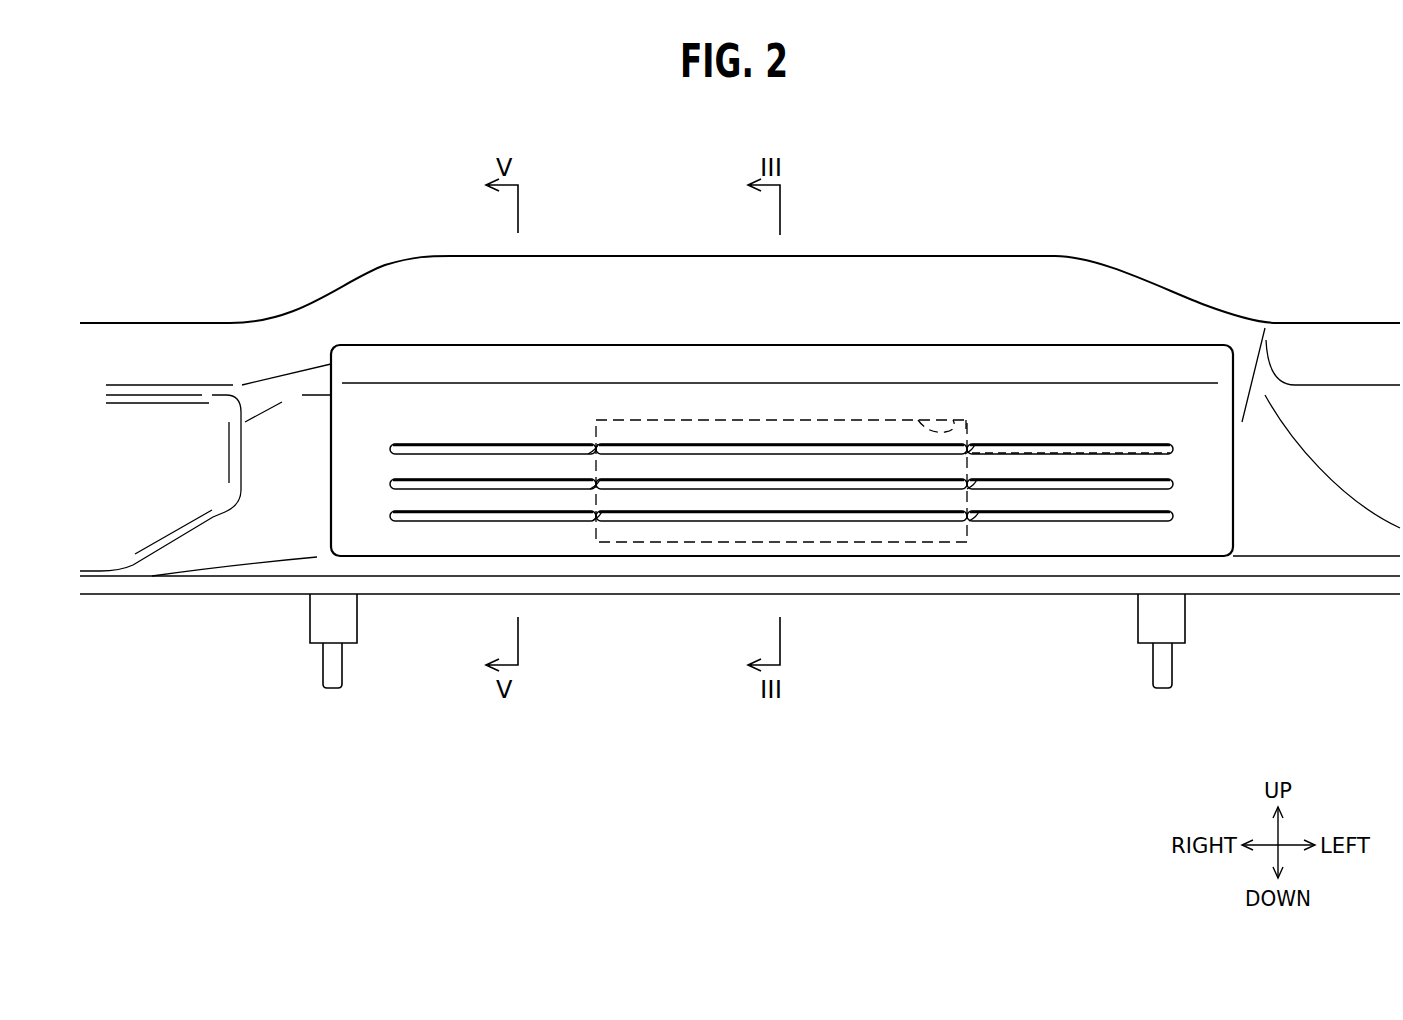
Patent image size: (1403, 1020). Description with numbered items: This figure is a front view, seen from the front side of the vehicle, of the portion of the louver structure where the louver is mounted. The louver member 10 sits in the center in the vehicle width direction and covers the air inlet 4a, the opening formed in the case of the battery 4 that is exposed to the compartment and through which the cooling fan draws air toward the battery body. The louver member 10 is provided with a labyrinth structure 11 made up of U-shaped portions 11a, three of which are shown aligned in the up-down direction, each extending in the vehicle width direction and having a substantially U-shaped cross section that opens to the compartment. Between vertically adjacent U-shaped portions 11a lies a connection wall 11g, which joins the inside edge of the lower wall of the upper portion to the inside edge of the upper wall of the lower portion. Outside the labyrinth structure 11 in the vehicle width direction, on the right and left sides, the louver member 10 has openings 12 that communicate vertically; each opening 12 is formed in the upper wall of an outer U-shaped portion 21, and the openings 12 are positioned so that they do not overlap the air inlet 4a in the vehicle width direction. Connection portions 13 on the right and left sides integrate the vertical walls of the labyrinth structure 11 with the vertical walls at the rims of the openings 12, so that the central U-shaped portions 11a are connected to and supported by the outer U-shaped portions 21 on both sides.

The battery 4 is at (1003, 288).
The air inlet 4a is at (953, 420).
The louver member 10 is at (1085, 368).
The labyrinth structure 11 is at (745, 425).
The U-shaped portion 11a is at (862, 522).
The connection wall 11g is at (705, 500).
The opening 12 is at (467, 522).
The connection portion 13 is at (598, 523).
The U-shaped portion 21 is at (400, 425).